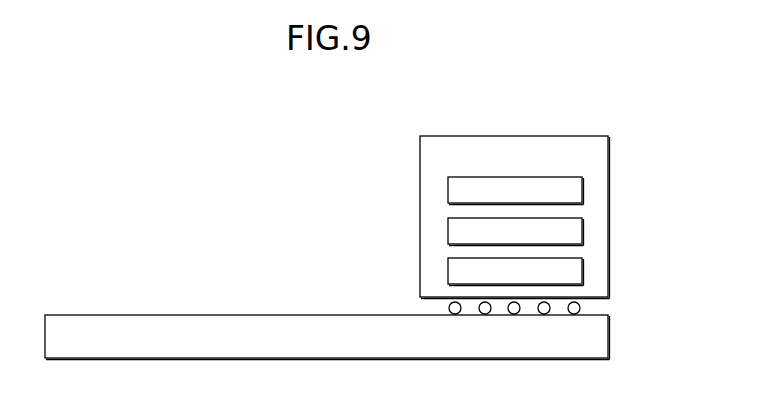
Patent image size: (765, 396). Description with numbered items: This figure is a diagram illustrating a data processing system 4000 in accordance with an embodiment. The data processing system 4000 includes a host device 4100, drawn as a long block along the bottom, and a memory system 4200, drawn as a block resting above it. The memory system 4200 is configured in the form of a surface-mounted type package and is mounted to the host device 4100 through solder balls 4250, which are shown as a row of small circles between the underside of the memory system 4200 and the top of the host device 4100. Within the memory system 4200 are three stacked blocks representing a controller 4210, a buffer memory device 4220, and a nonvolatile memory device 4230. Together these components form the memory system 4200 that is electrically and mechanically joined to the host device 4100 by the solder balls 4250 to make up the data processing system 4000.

The data processing system 4000 is at (121, 109).
The host device 4100 is at (327, 337).
The memory system 4200 is at (515, 217).
The controller 4210 is at (516, 191).
The buffer memory device 4220 is at (516, 232).
The nonvolatile memory device 4230 is at (516, 272).
The solder balls 4250 is at (588, 305).